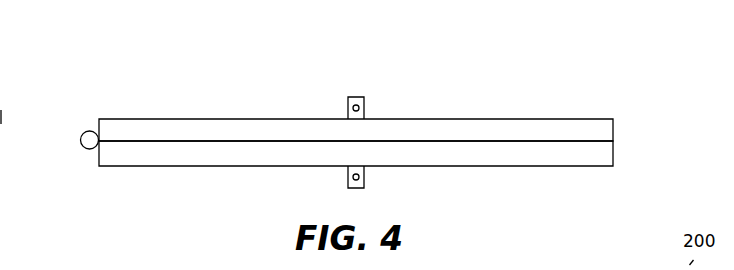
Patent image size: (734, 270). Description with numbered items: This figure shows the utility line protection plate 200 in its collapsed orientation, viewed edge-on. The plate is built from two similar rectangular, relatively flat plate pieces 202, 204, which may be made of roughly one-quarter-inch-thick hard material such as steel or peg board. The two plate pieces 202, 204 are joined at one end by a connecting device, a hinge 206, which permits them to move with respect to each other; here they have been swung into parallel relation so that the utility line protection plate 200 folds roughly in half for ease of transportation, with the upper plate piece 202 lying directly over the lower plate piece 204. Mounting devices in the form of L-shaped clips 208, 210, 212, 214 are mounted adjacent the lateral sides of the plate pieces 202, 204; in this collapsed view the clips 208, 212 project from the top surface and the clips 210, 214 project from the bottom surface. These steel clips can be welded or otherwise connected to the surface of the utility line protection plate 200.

The utility line protection plate 200 is at (378, 146).
The plate piece 202 is at (413, 128).
The plate piece 204 is at (293, 157).
The hinge 206 is at (83, 147).
The L-shaped clip 208 is at (347, 96).
The L-shaped clip 210 is at (365, 187).
The L-shaped clip 212 is at (284, 87).
The L-shaped clip 214 is at (435, 193).